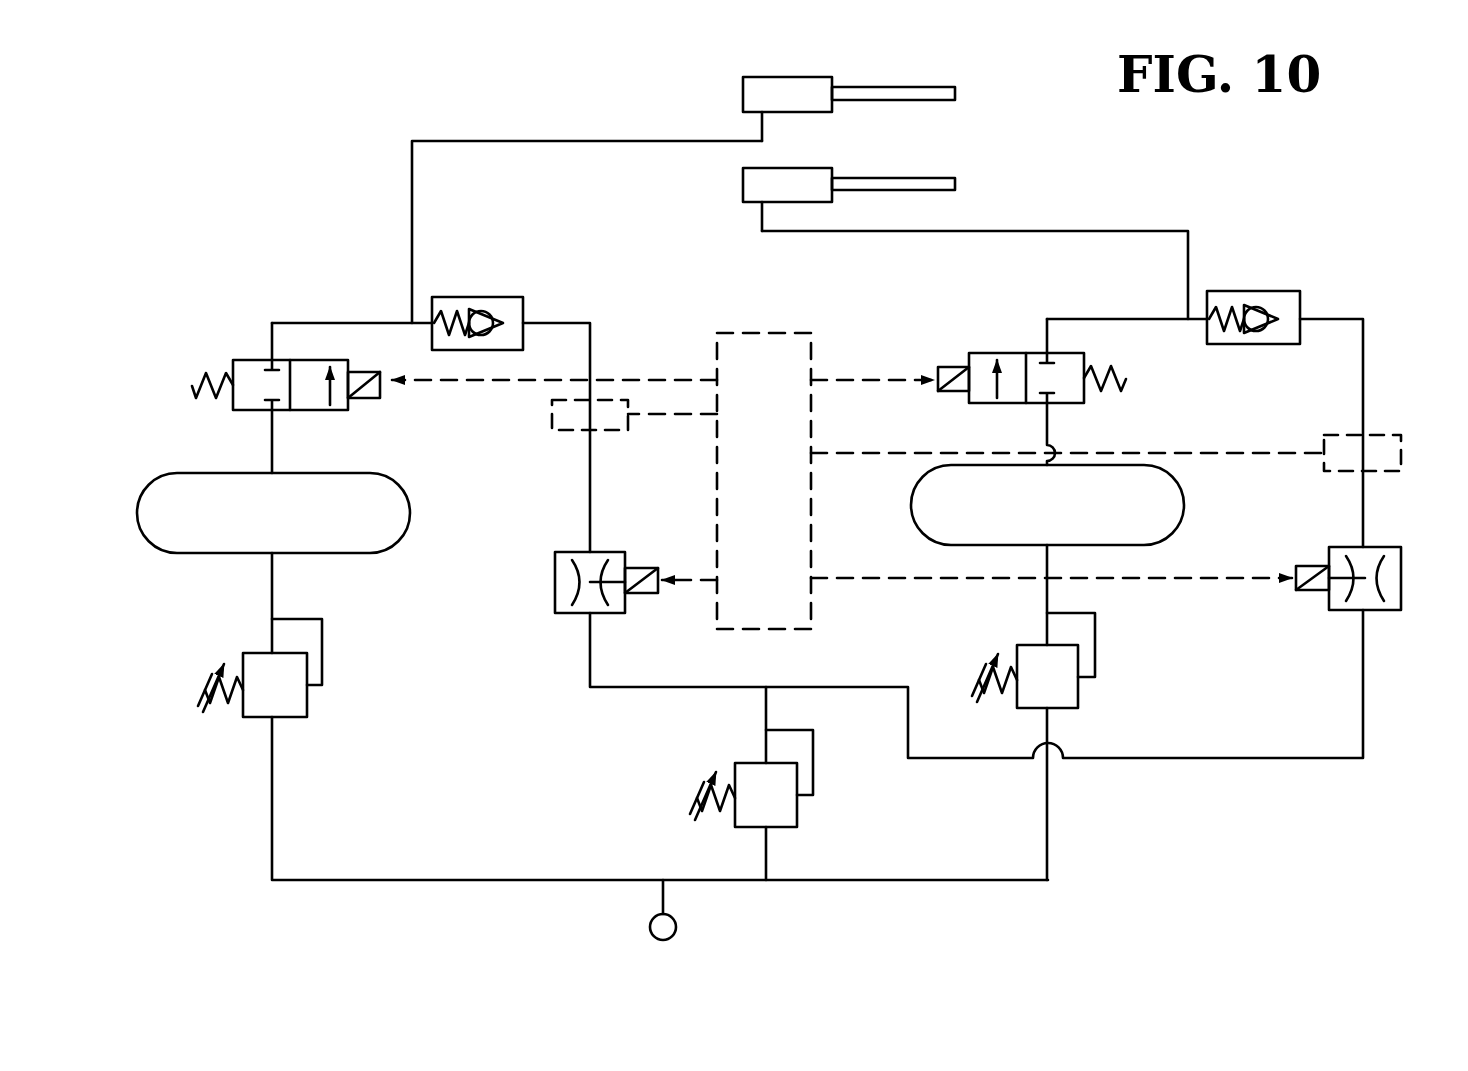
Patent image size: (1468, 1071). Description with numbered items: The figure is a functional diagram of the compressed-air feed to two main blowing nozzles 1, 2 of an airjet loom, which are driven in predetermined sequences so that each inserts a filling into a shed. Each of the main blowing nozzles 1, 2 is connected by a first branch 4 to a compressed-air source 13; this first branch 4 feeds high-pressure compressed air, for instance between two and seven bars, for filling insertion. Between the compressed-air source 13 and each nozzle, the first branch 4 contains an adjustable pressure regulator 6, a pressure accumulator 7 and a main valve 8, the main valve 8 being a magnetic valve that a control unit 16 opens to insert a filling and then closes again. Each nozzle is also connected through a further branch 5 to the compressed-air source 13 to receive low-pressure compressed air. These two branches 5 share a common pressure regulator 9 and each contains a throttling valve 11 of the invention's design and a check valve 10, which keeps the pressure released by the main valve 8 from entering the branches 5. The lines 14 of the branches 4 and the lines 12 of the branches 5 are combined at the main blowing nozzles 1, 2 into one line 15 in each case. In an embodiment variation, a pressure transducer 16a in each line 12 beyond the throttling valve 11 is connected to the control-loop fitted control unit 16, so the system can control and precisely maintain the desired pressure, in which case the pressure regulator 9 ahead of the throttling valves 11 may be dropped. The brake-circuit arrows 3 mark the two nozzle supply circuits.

The main blowing nozzle 1 is at (760, 86).
The main blowing nozzle 2 is at (752, 181).
The brake circuit 3 is at (335, 245).
The first branch 4 is at (348, 768).
The further branch 5 is at (630, 718).
The pressure regulator 6 is at (262, 705).
The pressure accumulator 7 is at (237, 540).
The main valve 8 is at (248, 365).
The common pressure regulator 9 is at (748, 775).
The check valve 10 is at (498, 303).
The throttling valve 11 is at (612, 553).
The line 12 is at (590, 465).
The compressed-air source 13 is at (655, 925).
The line 14 is at (332, 883).
The line 15 is at (550, 140).
The control unit 16 is at (768, 340).
The pressure transducer 16a is at (552, 420).